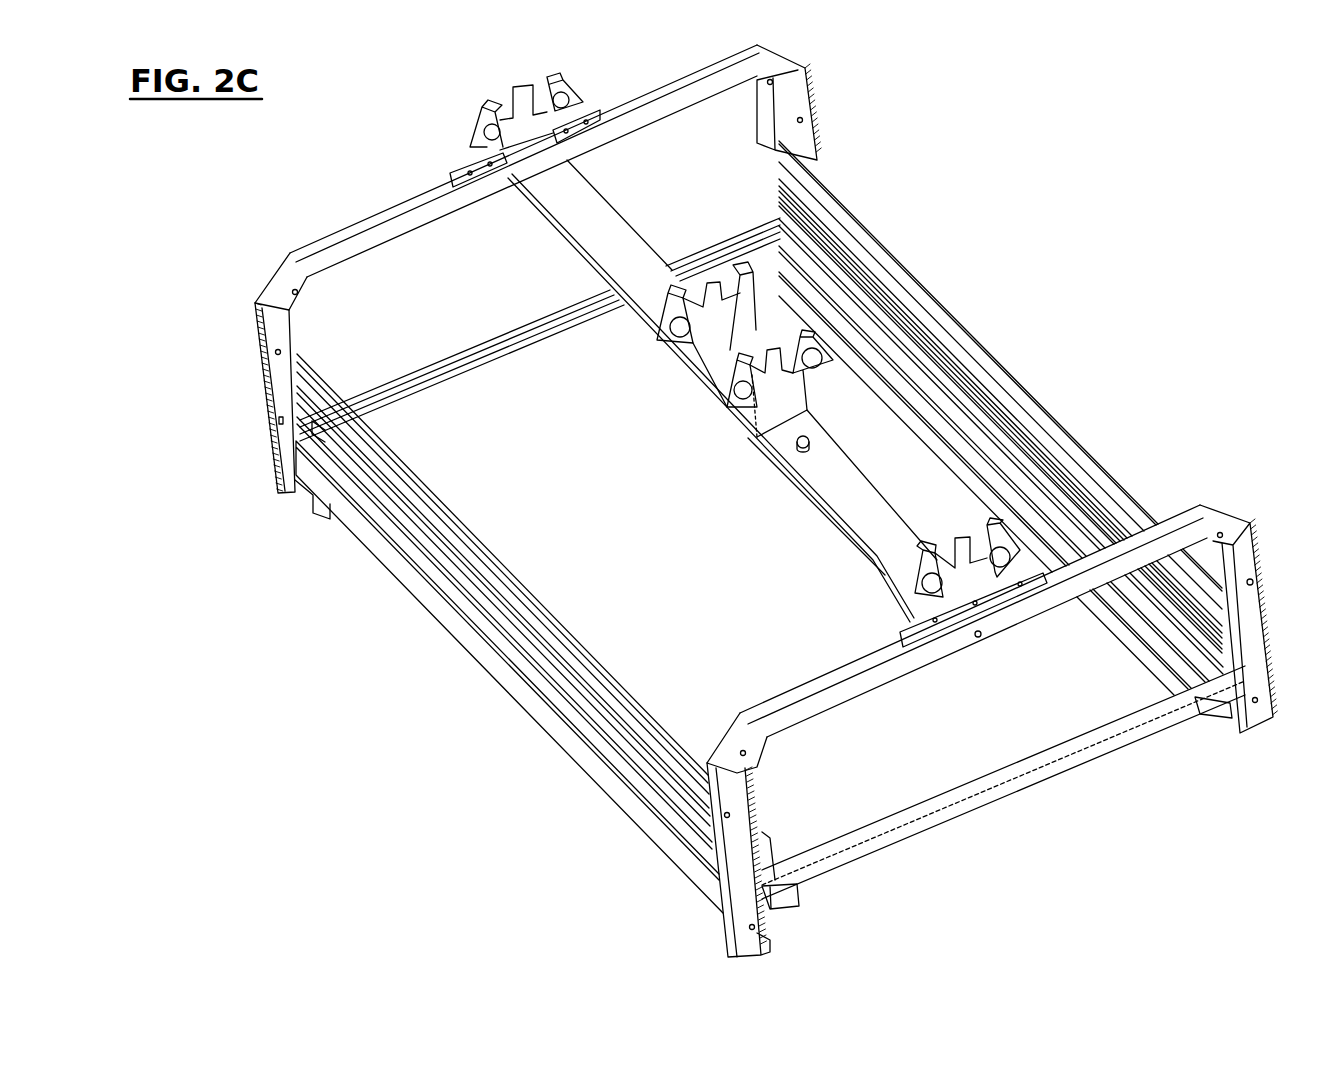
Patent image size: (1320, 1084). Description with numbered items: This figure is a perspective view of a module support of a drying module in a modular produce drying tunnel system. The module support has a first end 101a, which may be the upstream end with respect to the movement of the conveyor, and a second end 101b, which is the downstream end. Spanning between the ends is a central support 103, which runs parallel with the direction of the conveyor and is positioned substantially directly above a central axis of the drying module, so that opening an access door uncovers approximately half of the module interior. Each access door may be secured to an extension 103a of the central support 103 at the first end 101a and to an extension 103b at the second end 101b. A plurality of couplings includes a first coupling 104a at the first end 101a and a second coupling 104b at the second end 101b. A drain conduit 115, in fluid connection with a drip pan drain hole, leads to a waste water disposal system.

The first end 101a is at (413, 160).
The second end 101b is at (1093, 818).
The central support 103 is at (613, 243).
The extension of the central support 103a is at (480, 170).
The extension of the central support 103b is at (927, 630).
The first coupling 104a is at (343, 253).
The second coupling 104b is at (808, 688).
The drain conduit 115 is at (787, 905).